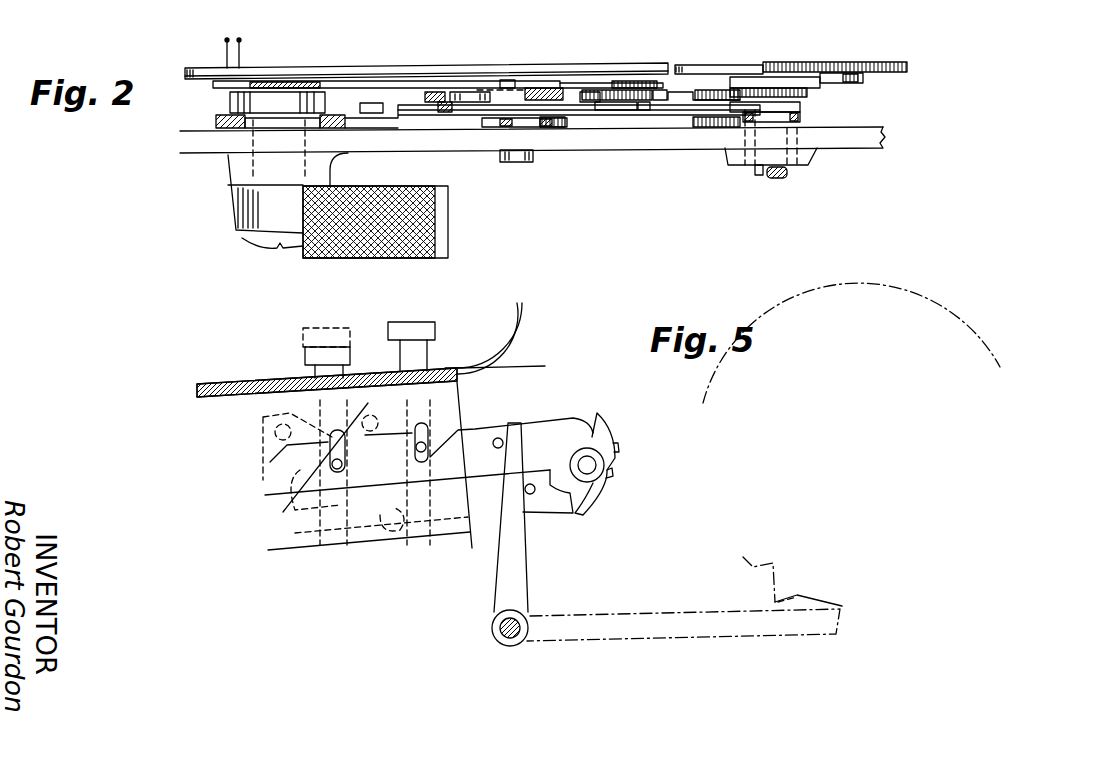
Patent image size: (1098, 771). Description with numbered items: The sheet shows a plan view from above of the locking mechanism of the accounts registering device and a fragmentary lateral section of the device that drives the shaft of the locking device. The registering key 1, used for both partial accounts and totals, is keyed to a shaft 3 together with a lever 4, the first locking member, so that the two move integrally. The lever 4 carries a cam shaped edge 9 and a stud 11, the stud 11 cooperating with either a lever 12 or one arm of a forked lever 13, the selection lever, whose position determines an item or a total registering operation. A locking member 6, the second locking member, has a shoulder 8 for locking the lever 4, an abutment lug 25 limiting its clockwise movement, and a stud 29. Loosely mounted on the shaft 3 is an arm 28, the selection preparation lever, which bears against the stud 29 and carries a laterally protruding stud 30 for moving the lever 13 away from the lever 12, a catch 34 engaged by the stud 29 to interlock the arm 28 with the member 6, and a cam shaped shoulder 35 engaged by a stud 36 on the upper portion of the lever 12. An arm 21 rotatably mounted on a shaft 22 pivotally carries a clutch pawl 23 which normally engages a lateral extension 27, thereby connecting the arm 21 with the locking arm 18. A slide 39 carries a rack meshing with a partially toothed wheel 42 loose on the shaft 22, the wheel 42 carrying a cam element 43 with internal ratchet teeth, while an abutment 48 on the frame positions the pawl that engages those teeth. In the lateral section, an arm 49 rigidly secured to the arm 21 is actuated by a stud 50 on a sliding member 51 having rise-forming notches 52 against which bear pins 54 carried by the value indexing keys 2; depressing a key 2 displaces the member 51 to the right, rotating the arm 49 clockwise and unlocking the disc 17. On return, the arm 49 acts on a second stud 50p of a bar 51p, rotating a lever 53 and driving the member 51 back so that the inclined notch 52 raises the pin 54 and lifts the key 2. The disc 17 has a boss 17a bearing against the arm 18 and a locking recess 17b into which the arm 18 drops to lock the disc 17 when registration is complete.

In FIG. 2, the key 1 is at (423, 160).
In FIG. 5, the value indexing keys 2 is at (322, 350).
In FIG. 2, the shaft 3 is at (230, 163).
In FIG. 2, the lever 4 is at (560, 83).
In FIG. 2, the locking member 6 is at (685, 88).
In FIG. 2, the shoulder 8 is at (657, 88).
In FIG. 2, the cam shaped edge 9 is at (570, 90).
In FIG. 2, the stud 11 is at (462, 92).
In FIG. 2, the lever 12 is at (432, 92).
In FIG. 2, the forked lever 13 is at (537, 125).
In FIG. 5, the disc 17 is at (708, 510).
In FIG. 5, the boss 17a is at (775, 603).
In FIG. 5, the locking recess 17b is at (777, 565).
In FIG. 5, the locking arm 18 is at (650, 620).
In FIG. 2, the arm 21 is at (780, 95).
In FIG. 2, the shaft 22 is at (757, 172).
In FIG. 5, the shaft 22 is at (495, 630).
In FIG. 2, the clutch pawl 23 is at (800, 115).
In FIG. 2, the abutment lug 25 is at (637, 92).
In FIG. 2, the lateral extension 27 is at (802, 105).
In FIG. 2, the arm 28 is at (415, 112).
In FIG. 2, the stud 29 is at (625, 108).
In FIG. 2, the stud 30 is at (505, 128).
In FIG. 2, the catch 34 is at (658, 93).
In FIG. 2, the cam-shaped shoulder 35 is at (370, 113).
In FIG. 2, the stud 36 is at (446, 112).
In FIG. 2, the slide 39 is at (625, 70).
In FIG. 2, the partially toothed wheel 42 is at (893, 62).
In FIG. 2, the cam element 43 is at (863, 78).
In FIG. 2, the abutment 48 is at (725, 147).
In FIG. 5, the arm 49 is at (520, 590).
In FIG. 5, the stud 50 is at (499, 438).
In FIG. 5, the stud 50p is at (533, 493).
In FIG. 5, the sliding member 51 is at (560, 425).
In FIG. 5, the bar 51p is at (482, 512).
In FIG. 5, the rise-forming notches 52 is at (352, 430).
In FIG. 5, the lever 53 is at (605, 440).
In FIG. 5, the pins 54 is at (363, 473).